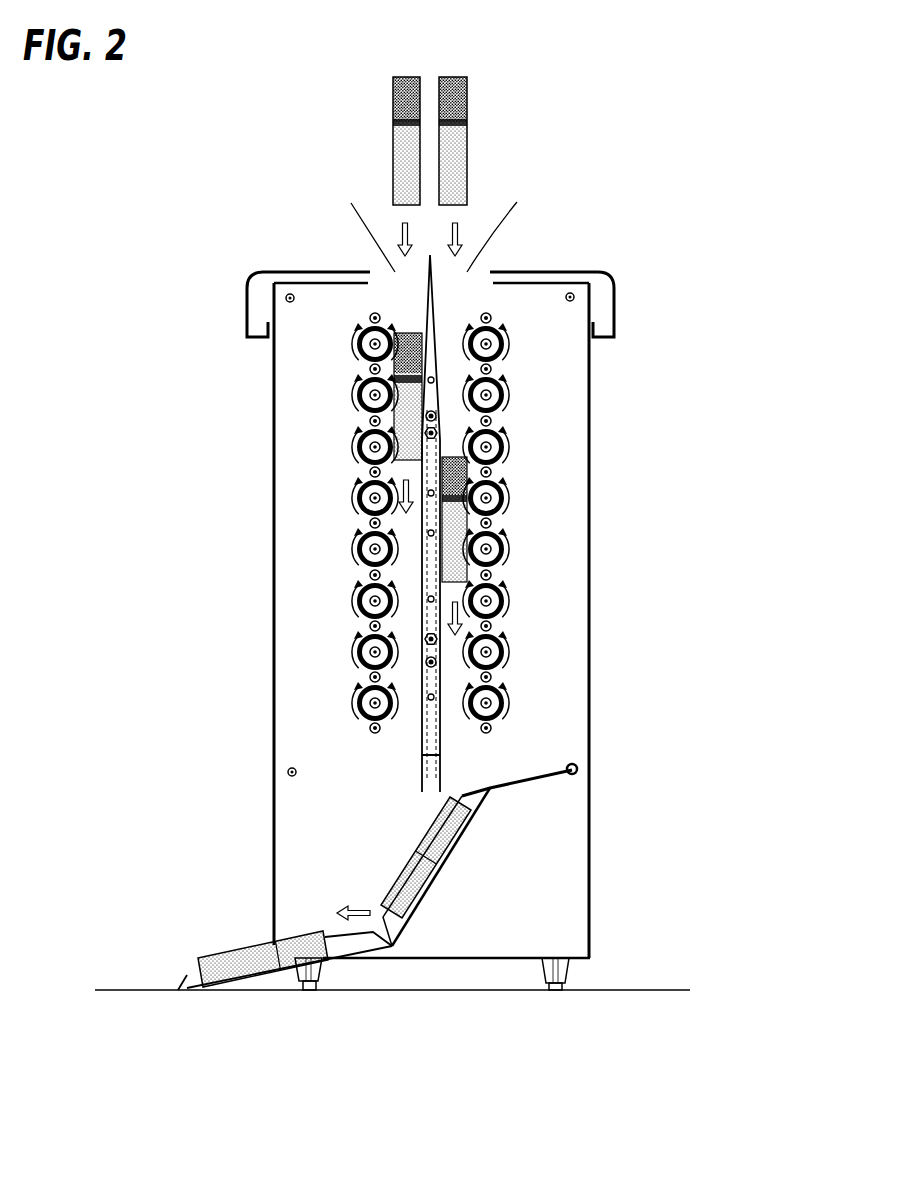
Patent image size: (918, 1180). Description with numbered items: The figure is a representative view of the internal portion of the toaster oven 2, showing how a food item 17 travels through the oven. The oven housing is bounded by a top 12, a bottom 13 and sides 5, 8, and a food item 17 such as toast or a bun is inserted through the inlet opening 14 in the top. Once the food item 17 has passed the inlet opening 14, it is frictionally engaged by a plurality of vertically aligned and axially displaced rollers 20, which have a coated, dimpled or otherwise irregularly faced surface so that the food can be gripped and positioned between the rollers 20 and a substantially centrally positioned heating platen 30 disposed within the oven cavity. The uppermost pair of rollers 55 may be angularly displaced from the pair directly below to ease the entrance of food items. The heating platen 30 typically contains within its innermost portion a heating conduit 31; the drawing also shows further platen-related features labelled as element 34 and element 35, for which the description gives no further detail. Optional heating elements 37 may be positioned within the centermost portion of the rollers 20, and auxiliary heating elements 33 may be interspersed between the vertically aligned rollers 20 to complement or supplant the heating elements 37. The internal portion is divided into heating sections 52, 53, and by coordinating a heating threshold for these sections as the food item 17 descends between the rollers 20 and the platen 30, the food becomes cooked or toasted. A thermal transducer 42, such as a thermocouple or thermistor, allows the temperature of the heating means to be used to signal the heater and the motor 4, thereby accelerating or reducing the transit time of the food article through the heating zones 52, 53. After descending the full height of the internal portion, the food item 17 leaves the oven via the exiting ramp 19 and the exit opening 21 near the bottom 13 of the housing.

The toaster oven 2 is at (650, 260).
The motor 4 is at (272, 398).
The side 5 is at (554, 866).
The side 8 is at (589, 385).
The top 12 is at (570, 272).
The bottom 13 is at (443, 958).
The inlet opening 14 is at (432, 222).
The food item 17 is at (411, 77).
The exiting ramp 19 is at (385, 905).
The rollers 20 is at (368, 392).
The exit opening 21 is at (274, 897).
The heating platen 30 is at (437, 748).
The heating conduit 31 is at (424, 598).
The auxiliary heating elements 33 is at (443, 678).
The transport arrow 34 is at (500, 632).
The chain 35 is at (420, 558).
The heating elements 37 is at (368, 400).
The thermal transducer 42 is at (424, 610).
The heating section 52 is at (452, 413).
The heating section 53 is at (400, 470).
The uppermost pair of rollers 55 is at (374, 330).